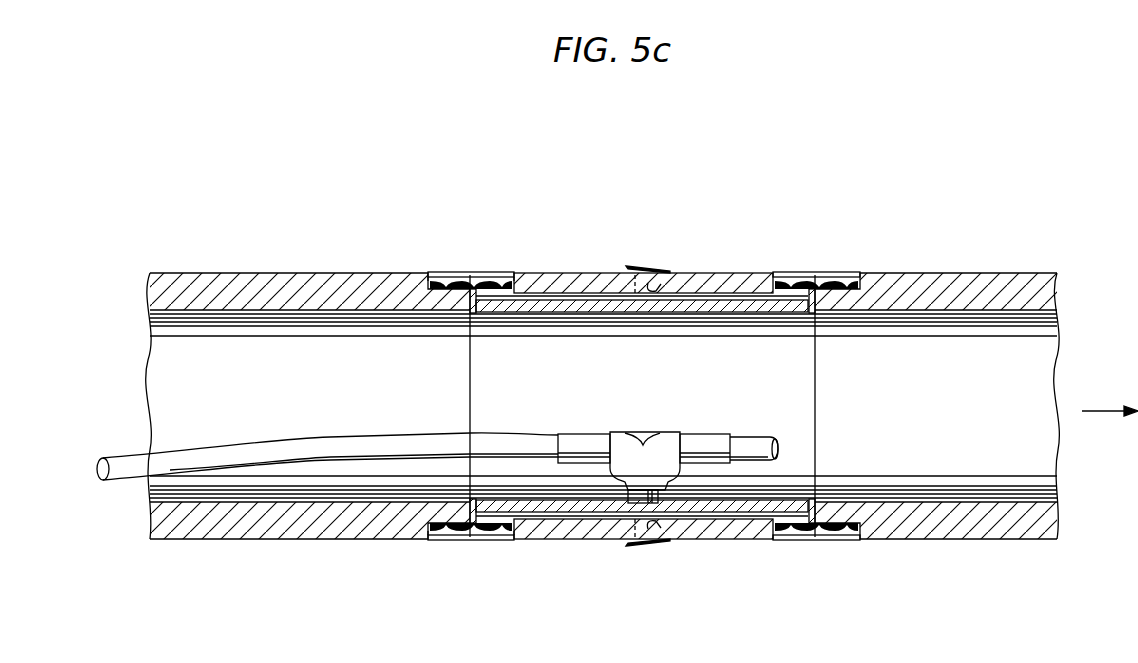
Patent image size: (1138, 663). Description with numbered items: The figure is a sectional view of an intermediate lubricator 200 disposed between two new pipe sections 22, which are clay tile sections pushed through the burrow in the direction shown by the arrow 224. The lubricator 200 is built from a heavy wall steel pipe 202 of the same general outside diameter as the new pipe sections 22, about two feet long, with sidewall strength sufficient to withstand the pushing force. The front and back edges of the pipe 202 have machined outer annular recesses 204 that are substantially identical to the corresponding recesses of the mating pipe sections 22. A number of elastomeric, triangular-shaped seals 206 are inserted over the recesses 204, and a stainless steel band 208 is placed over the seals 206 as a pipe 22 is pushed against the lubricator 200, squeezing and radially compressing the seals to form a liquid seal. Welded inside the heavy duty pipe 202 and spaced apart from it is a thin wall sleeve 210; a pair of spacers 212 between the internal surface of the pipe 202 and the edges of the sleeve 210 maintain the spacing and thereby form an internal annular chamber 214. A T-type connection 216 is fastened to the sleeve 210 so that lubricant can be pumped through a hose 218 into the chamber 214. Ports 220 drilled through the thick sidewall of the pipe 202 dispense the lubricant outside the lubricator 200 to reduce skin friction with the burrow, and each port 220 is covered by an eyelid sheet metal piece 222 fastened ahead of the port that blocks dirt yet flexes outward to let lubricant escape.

The intermediate lubricator 200 is at (646, 143).
The new pipe sections 22 is at (240, 273).
The heavy wall steel pipe 202 is at (612, 273).
The outer annular recesses 204 is at (500, 280).
The elastomeric triangular-shaped seals 206 is at (485, 278).
The stainless steel band 208 is at (440, 273).
The thin wall sleeve 210 is at (590, 312).
The spacers 212 is at (513, 315).
The internal annular chamber 214 is at (670, 318).
The T-type connection 216 is at (618, 432).
The hose 218 is at (330, 440).
The ports 220 is at (678, 288).
The eyelid sheet metal piece 222 is at (640, 266).
The arrow 224 is at (1090, 411).